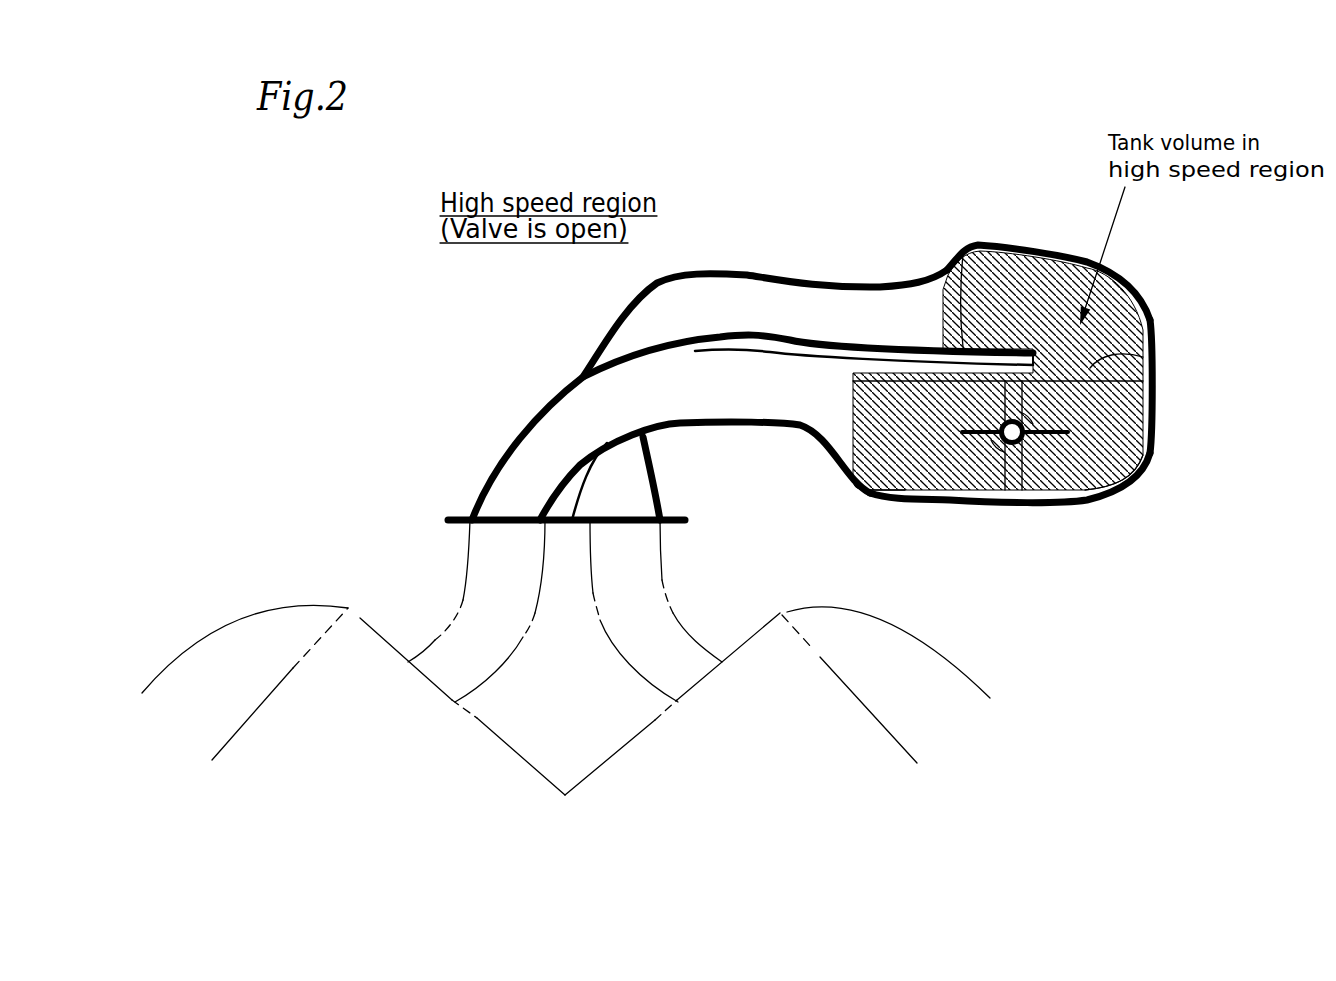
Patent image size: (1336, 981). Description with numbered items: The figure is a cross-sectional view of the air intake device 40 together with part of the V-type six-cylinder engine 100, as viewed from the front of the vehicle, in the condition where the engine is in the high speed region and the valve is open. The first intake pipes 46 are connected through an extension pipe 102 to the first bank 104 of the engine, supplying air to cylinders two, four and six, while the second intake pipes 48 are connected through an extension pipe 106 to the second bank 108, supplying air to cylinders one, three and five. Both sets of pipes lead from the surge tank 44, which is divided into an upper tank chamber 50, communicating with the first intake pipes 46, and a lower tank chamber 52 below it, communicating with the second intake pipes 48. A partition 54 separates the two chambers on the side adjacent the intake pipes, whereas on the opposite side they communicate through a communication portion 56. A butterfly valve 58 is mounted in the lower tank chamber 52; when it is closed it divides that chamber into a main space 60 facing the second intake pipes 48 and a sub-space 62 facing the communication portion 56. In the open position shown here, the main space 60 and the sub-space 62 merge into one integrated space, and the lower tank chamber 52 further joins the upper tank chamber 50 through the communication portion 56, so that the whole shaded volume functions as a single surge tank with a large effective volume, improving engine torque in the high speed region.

The air intake device 40 is at (840, 145).
The surge tank 44 is at (1170, 403).
The first intake pipes 46 is at (707, 270).
The second intake pipes 48 is at (733, 426).
The upper tank chamber 50 is at (1020, 247).
The lower tank chamber 52 is at (955, 507).
The partition 54 is at (985, 247).
The communication portion 56 is at (1155, 357).
The valve 58 is at (1073, 500).
The main space 60 is at (883, 503).
The sub-space 62 is at (1112, 498).
The V-type 6-cylinder engine 100 is at (232, 612).
The extension pipe 102 is at (682, 603).
The first bank 104 is at (753, 630).
The extension pipe 106 is at (460, 597).
The second bank 108 is at (377, 630).